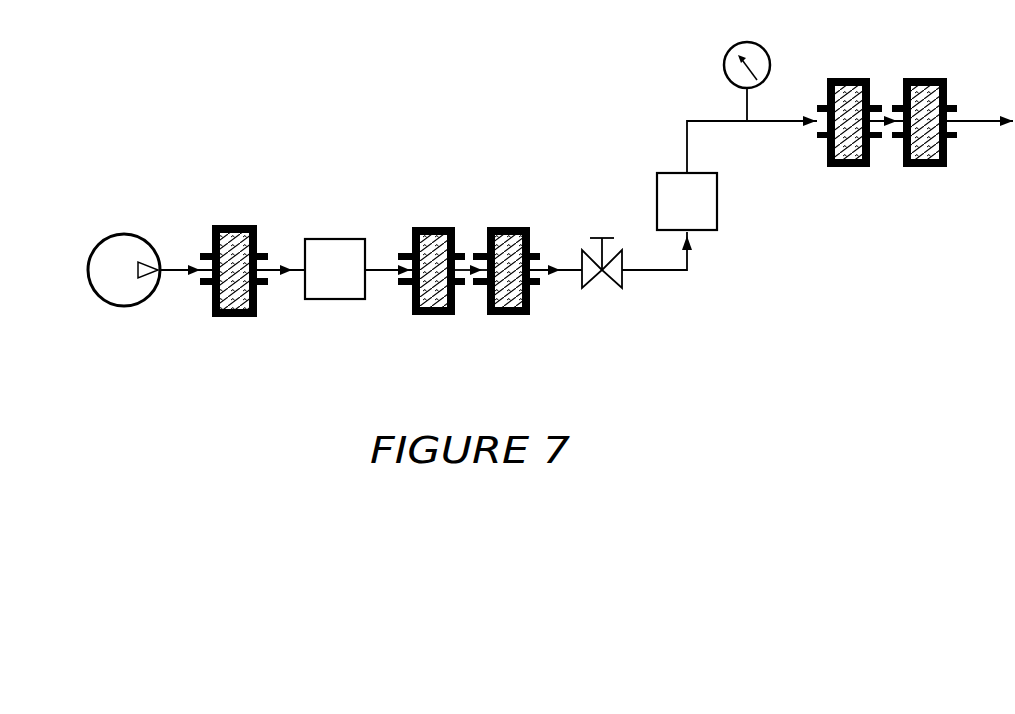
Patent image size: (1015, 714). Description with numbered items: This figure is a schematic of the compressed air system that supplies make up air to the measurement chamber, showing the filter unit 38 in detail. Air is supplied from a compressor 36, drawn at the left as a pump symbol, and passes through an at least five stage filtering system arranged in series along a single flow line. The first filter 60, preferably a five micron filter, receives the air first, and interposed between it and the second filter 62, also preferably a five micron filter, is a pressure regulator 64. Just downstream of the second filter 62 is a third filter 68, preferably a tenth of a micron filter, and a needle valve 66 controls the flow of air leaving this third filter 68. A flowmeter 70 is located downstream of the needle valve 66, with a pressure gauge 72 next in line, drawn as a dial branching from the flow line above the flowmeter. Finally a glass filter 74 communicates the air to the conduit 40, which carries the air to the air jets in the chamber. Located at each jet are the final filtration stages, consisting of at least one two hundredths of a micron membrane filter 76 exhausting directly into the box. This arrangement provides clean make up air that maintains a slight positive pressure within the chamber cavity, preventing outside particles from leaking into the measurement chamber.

The compressor 36 is at (107, 237).
The filter unit 38 is at (488, 138).
The conduit 40 is at (885, 118).
The first filter 60 is at (227, 225).
The second filter 62 is at (438, 227).
The pressure regulator 64 is at (335, 238).
The needle valve 66 is at (622, 280).
The third filter 68 is at (515, 227).
The flowmeter 70 is at (717, 196).
The pressure gauge 72 is at (767, 43).
The glass filter 74 is at (853, 168).
The membrane filters 76 is at (928, 168).